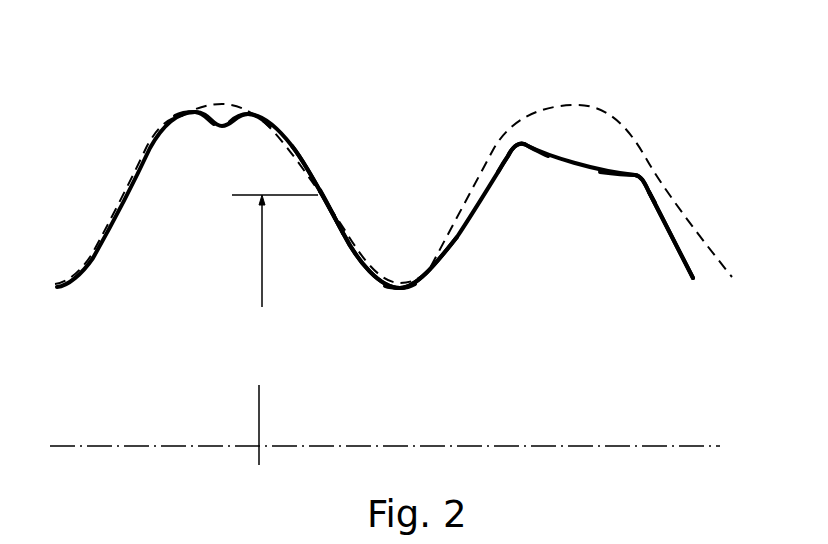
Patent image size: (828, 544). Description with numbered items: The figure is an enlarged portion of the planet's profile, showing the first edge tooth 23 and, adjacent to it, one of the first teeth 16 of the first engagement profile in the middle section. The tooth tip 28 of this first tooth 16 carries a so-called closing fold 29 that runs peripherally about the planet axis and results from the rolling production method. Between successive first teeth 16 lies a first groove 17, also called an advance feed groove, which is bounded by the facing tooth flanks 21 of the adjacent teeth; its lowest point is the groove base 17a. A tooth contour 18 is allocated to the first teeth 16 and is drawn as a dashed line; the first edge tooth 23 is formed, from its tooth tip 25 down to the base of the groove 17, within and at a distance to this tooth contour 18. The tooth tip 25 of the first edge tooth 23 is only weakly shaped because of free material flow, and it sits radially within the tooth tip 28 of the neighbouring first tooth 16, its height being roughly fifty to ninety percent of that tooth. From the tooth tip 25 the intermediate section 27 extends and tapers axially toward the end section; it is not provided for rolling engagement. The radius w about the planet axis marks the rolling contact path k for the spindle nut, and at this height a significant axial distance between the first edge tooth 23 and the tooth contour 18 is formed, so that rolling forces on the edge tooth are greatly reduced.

The first tooth 16 is at (215, 182).
The first groove 17 is at (395, 250).
The valley base 17a is at (400, 283).
The tooth contour 18 is at (223, 112).
The tooth flank 21 is at (337, 217).
The first edge tooth 23 is at (612, 218).
The tooth tip 25 is at (517, 135).
The intermediate section 27 is at (623, 173).
The tooth tip 28 is at (253, 117).
The closing fold 29 is at (203, 111).
The contour line k is at (318, 188).
The radius w is at (262, 250).